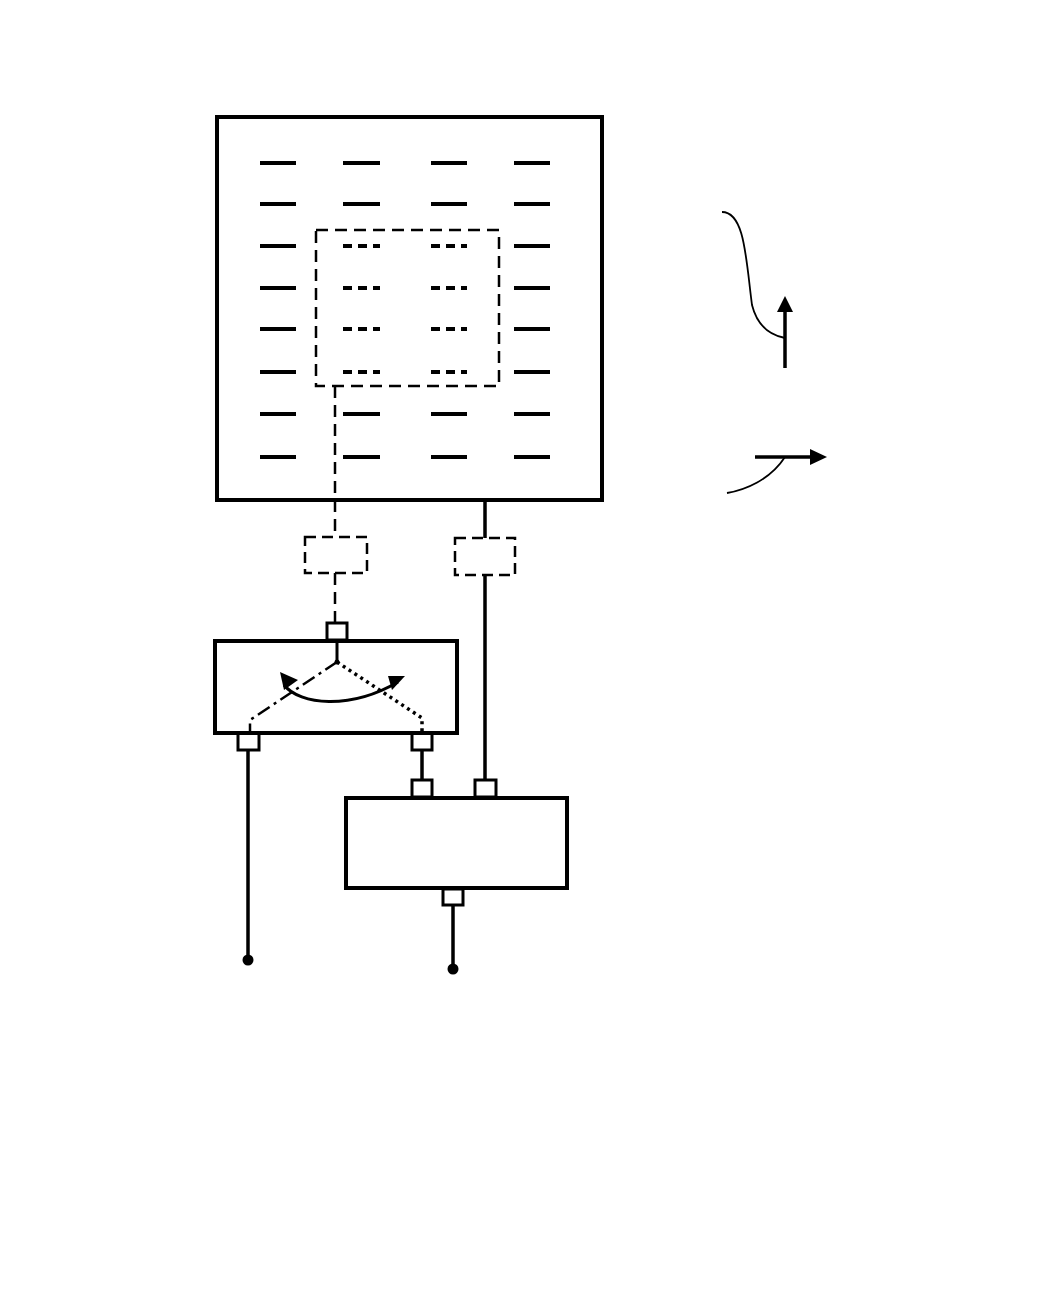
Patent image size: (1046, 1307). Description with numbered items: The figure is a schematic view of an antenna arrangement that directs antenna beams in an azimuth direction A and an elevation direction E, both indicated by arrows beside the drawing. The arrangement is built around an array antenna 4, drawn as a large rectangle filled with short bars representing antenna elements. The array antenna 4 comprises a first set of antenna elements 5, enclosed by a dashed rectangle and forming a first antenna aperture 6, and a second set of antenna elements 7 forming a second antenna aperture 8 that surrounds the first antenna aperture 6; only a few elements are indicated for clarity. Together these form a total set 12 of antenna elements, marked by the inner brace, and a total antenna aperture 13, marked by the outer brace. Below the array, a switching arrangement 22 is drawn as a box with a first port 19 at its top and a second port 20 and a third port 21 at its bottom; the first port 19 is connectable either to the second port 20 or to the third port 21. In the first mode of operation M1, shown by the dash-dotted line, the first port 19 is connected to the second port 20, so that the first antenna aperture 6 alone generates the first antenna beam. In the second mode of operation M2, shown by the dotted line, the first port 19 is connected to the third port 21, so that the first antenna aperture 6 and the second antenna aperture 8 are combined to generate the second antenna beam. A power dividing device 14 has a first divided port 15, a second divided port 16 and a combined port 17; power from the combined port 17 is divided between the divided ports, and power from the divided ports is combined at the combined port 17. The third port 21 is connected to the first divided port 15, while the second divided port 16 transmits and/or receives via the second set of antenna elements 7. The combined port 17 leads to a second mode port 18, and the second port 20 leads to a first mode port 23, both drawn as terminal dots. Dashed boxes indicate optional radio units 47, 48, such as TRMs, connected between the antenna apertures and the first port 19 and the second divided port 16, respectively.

The array antenna 4 is at (240, 44).
The first set of antenna elements 5 is at (445, 372).
The first antenna aperture 6 is at (462, 230).
The second set of antenna elements 7 is at (279, 329).
The second antenna aperture 8 is at (557, 501).
The total set of antenna elements 12 is at (245, 167).
The total antenna aperture 13 is at (200, 117).
The power dividing device 14 is at (456, 843).
The first divided port 15 is at (422, 785).
The second divided port 16 is at (487, 785).
The combined port 17 is at (460, 895).
The second mode port 18 is at (458, 972).
The first port 19 is at (328, 625).
The second port 20 is at (238, 747).
The third port 21 is at (412, 745).
The switching arrangement 22 is at (235, 675).
The first mode port 23 is at (253, 964).
The radio unit 47 is at (305, 548).
The radio unit 48 is at (515, 565).
The elevation direction E is at (747, 283).
The azimuth direction A is at (765, 478).
The first mode of operation M1 is at (318, 675).
The second mode of operation M2 is at (408, 705).